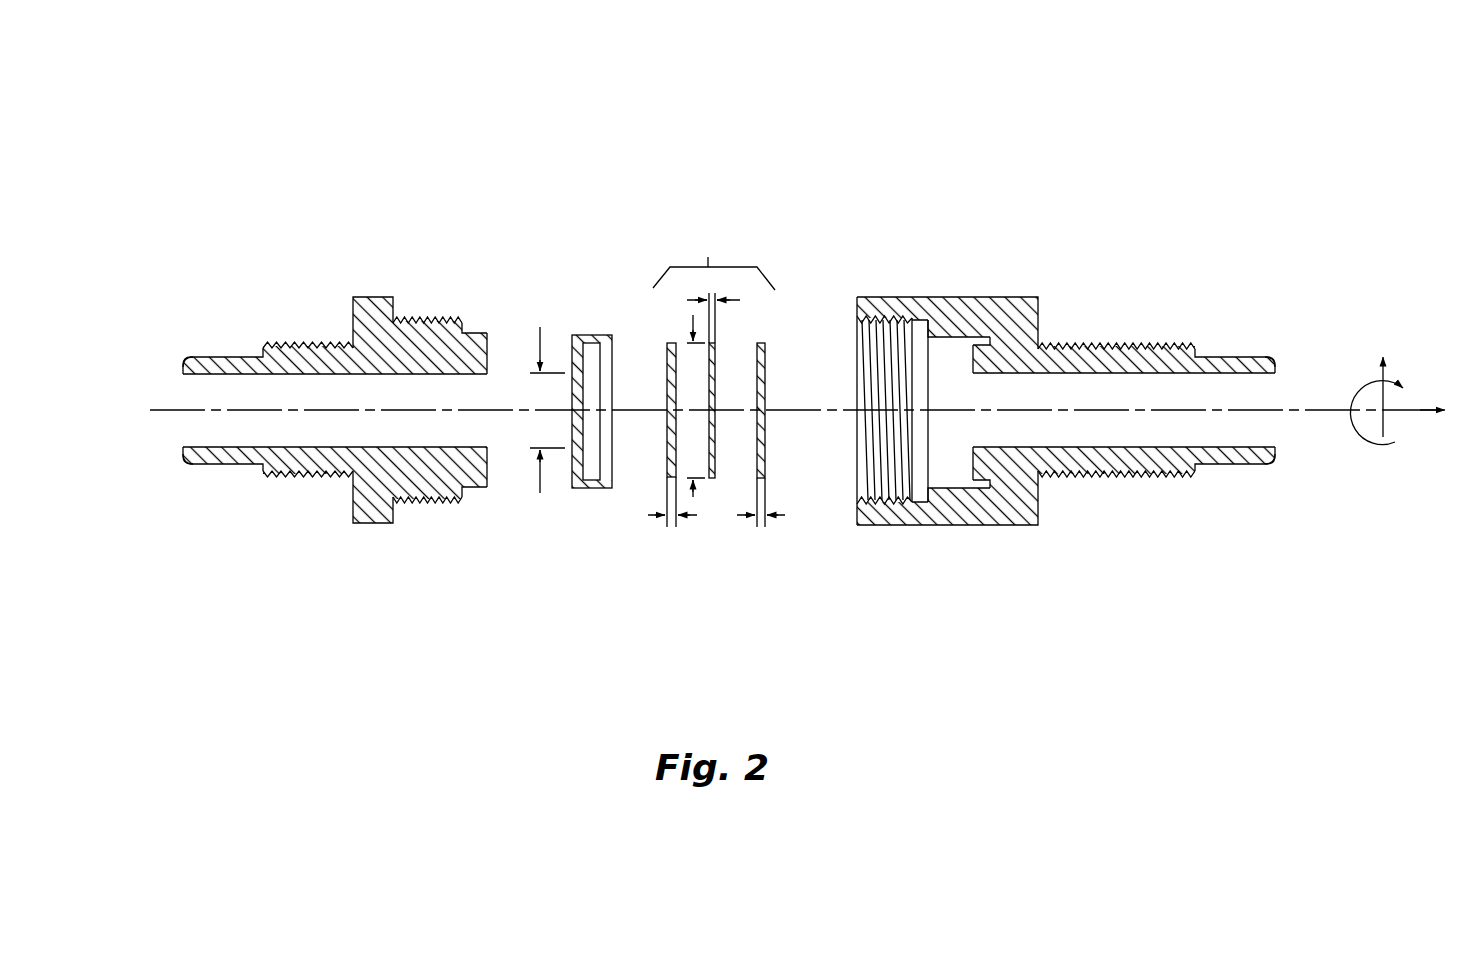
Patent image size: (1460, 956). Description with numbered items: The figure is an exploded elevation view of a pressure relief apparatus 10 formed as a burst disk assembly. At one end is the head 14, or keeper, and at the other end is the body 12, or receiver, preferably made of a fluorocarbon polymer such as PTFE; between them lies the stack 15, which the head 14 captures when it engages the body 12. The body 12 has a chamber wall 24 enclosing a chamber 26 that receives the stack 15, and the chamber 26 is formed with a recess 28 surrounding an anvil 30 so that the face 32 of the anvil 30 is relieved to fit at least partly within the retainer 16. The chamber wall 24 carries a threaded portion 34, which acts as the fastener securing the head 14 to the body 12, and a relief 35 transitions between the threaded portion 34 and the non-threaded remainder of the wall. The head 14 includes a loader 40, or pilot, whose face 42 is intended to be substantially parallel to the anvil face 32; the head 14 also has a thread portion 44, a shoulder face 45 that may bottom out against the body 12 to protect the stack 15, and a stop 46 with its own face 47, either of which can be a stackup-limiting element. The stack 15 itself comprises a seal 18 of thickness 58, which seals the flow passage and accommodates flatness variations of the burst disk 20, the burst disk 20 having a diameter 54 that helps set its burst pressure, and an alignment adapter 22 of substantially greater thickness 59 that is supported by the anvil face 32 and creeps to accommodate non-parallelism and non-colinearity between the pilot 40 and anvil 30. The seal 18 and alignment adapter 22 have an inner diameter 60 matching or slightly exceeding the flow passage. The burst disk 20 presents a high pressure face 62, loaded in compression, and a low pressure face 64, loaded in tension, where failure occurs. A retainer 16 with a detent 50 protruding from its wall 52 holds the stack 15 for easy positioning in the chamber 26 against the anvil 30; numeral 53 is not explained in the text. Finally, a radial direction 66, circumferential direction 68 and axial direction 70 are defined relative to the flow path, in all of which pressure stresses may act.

The pressure relief apparatus 10 is at (266, 146).
The body 12 is at (1099, 378).
The head 14 is at (310, 378).
The stack 15 is at (708, 262).
The retainer 16 is at (583, 401).
The seal 18 is at (666, 341).
The burst disk 20 is at (717, 490).
The alignment adapter 22 is at (767, 341).
The chamber wall 24 is at (1038, 312).
The chamber 26 is at (950, 350).
The recess 28 is at (980, 338).
The anvil 30 is at (983, 526).
The face of the anvil 32 is at (968, 467).
The threaded portion 34 is at (892, 318).
The relief 35 is at (917, 504).
The loader 40 is at (487, 488).
The face of the pilot 42 is at (492, 470).
The thread portion of the head 44 is at (437, 320).
The shoulder face 45 is at (463, 321).
The stop 46 is at (365, 524).
The face of the stop 47 is at (396, 516).
The detent 50 is at (606, 472).
The wall of the retainer 52 is at (600, 489).
The side wall of seat ring 53 is at (588, 489).
The diameter of the burst disk 54 is at (695, 497).
The thickness of the seal 58 is at (648, 517).
The thickness of the alignment adapter 59 is at (782, 514).
The inner diameter 60 is at (540, 327).
The high pressure face 62 is at (708, 380).
The low pressure face 64 is at (718, 437).
The radial direction 66 is at (1385, 400).
The circumferential direction 68 is at (1362, 440).
The axial direction 70 is at (1412, 412).